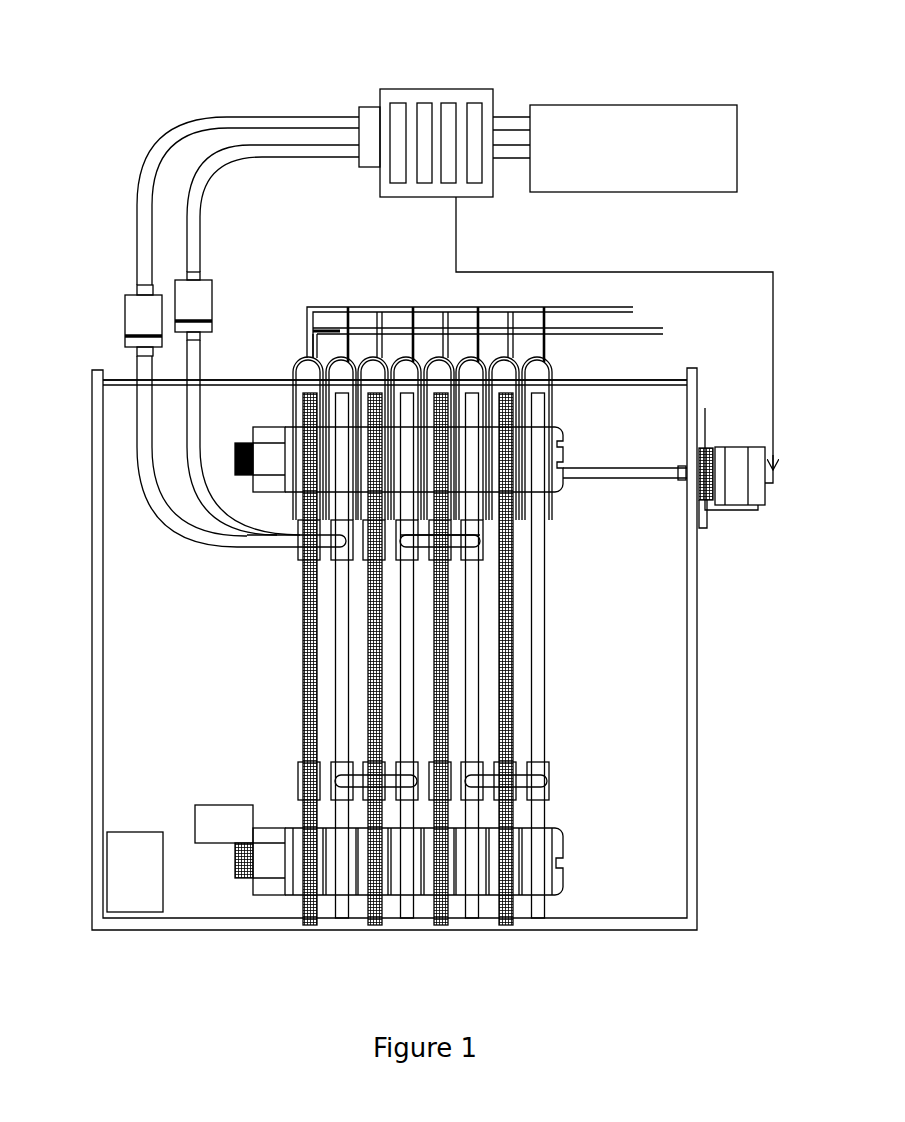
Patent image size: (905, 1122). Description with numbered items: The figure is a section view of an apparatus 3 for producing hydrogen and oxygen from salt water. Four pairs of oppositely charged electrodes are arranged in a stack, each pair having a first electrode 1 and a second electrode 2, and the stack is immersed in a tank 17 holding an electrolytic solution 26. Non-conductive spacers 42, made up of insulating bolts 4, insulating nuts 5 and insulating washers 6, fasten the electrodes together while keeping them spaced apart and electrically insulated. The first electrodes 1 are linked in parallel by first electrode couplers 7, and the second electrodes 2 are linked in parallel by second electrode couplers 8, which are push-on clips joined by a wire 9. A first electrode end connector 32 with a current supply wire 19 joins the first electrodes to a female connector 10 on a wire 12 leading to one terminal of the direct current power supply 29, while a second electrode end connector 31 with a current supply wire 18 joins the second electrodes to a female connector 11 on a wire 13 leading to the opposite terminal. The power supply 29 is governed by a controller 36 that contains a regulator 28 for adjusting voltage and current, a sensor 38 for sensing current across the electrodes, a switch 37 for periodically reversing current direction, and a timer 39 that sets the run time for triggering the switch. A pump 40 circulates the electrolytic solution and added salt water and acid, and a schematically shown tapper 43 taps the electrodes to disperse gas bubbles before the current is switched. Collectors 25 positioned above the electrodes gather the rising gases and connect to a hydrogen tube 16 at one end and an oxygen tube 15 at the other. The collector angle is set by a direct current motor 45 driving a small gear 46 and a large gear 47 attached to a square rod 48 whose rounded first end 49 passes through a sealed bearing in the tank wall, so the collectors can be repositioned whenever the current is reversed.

The first electrode 1 is at (512, 947).
The second electrode 2 is at (342, 727).
The apparatus 3 is at (426, 493).
The insulating bolt 4 is at (566, 440).
The insulating nut 5 is at (270, 888).
The insulating washer 6 is at (455, 867).
The first electrode coupler 7 is at (302, 782).
The second electrode coupler 8 is at (473, 553).
The wire 9 is at (425, 545).
The female connector 10 is at (145, 317).
The female connector 11 is at (192, 293).
The wire 12 is at (145, 226).
The wire 13 is at (227, 165).
The oxygen tube 15 is at (672, 335).
The hydrogen tube 16 is at (640, 310).
The tank 17 is at (697, 763).
The current supply wire 18 is at (192, 417).
The current supply wire 19 is at (150, 475).
The collector 25 is at (552, 365).
The electrolytic solution 26 is at (232, 587).
The regulator 28 is at (390, 108).
The power supply 29 is at (635, 170).
The second electrode end connector 31 is at (190, 338).
The first electrode end connector 32 is at (145, 348).
The controller 36 is at (380, 89).
The switch 37 is at (475, 105).
The sensor 38 is at (446, 105).
The timer 39 is at (423, 105).
The pump 40 is at (133, 832).
The non-conductive spacer 42 is at (577, 420).
The tapper 43 is at (195, 815).
The direct current motor 45 is at (731, 475).
The small gear 46 is at (705, 530).
The large gear 47 is at (705, 408).
The square rod 48 is at (662, 482).
The first end 49 is at (682, 482).